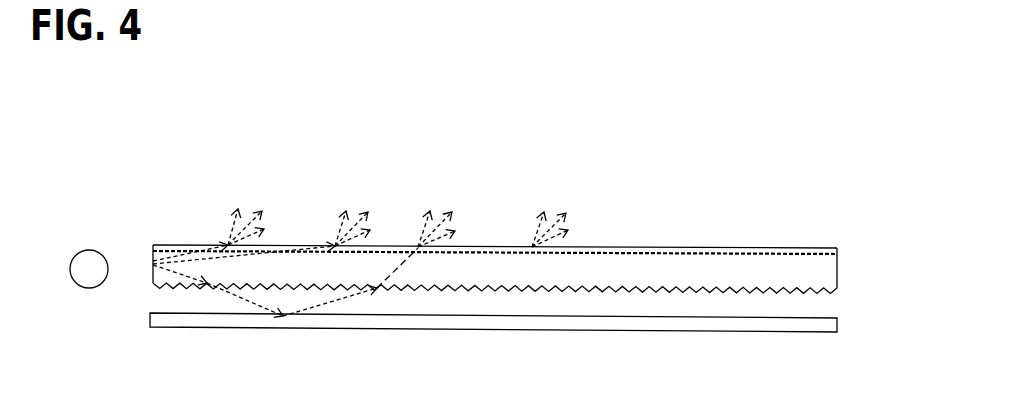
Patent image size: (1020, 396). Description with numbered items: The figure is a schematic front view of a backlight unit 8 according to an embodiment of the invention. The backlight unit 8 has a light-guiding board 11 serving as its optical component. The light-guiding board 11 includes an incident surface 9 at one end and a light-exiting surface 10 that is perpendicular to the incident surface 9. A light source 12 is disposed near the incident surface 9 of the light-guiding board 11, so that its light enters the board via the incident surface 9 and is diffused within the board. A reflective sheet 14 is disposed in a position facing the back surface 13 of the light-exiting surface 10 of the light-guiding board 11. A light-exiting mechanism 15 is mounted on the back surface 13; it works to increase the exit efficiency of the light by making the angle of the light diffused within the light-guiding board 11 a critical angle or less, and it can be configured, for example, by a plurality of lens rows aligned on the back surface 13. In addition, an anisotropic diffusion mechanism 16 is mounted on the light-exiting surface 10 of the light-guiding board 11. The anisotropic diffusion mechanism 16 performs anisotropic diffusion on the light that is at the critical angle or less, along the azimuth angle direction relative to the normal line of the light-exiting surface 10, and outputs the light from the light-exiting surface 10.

The backlight unit 8 is at (98, 185).
The incident surface 9 is at (147, 265).
The light-exiting surface 10 is at (292, 242).
The light-guiding board 11 is at (839, 270).
The light source 12 is at (74, 255).
The back surface 13 is at (478, 297).
The reflective sheet 14 is at (328, 330).
The light-exiting mechanism 15 is at (591, 293).
The anisotropic diffusion mechanism 16 is at (493, 246).